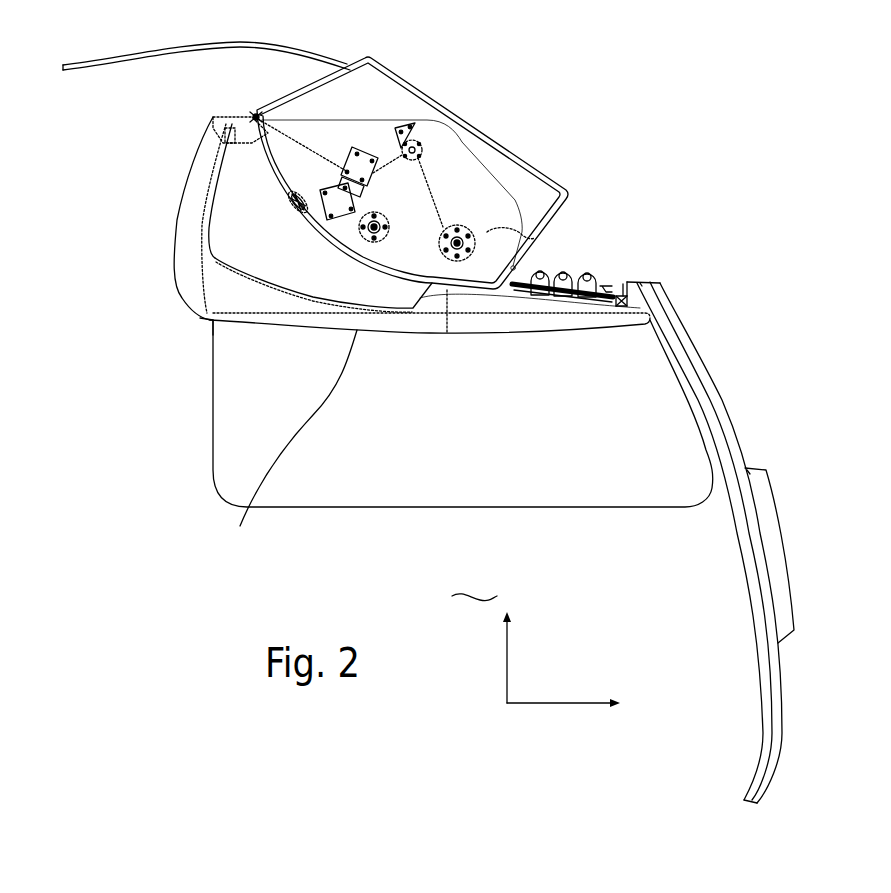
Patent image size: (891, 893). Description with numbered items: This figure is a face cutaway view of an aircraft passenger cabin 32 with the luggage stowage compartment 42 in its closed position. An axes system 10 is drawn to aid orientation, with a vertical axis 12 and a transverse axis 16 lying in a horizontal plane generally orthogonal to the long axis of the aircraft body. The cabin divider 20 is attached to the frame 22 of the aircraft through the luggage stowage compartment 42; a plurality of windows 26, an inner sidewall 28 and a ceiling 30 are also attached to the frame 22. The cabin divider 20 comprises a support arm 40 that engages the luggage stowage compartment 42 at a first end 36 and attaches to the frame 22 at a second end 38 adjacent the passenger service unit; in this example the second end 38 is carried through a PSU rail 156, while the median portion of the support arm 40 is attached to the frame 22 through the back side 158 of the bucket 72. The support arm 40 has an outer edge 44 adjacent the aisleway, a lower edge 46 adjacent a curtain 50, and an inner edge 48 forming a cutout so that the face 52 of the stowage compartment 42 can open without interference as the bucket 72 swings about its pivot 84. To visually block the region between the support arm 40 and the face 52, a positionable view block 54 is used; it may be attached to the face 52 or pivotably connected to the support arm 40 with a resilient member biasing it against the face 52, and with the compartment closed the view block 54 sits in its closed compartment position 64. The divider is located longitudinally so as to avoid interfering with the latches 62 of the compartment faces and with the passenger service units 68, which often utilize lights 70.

The axes system 10 is at (546, 676).
The vertical axis 12 is at (488, 657).
The transverse axis 16 is at (563, 720).
The cabin divider 20 is at (168, 413).
The frame 22 is at (735, 442).
The windows 26 is at (792, 600).
The inner sidewall 28 is at (758, 607).
The ceiling 30 is at (300, 52).
The passenger cabin 32 is at (474, 586).
The first end 36 is at (256, 117).
The second end 38 is at (641, 283).
The support arm 40 is at (176, 263).
The luggage stowage compartment 42 is at (537, 172).
The outer edge 44 is at (205, 307).
The lower edge 46 is at (285, 434).
The inner edge 48 is at (203, 197).
The curtain 50 is at (418, 505).
The face 52 is at (362, 250).
The view block 54 is at (405, 215).
The latches 62 is at (325, 250).
The closed compartment position 64 is at (253, 141).
The passenger service units 68 is at (557, 302).
The lights 70 is at (565, 274).
The bucket 72 is at (407, 214).
The pivot 84 is at (480, 245).
The PSU rail 156 is at (623, 282).
The back side 158 is at (525, 250).